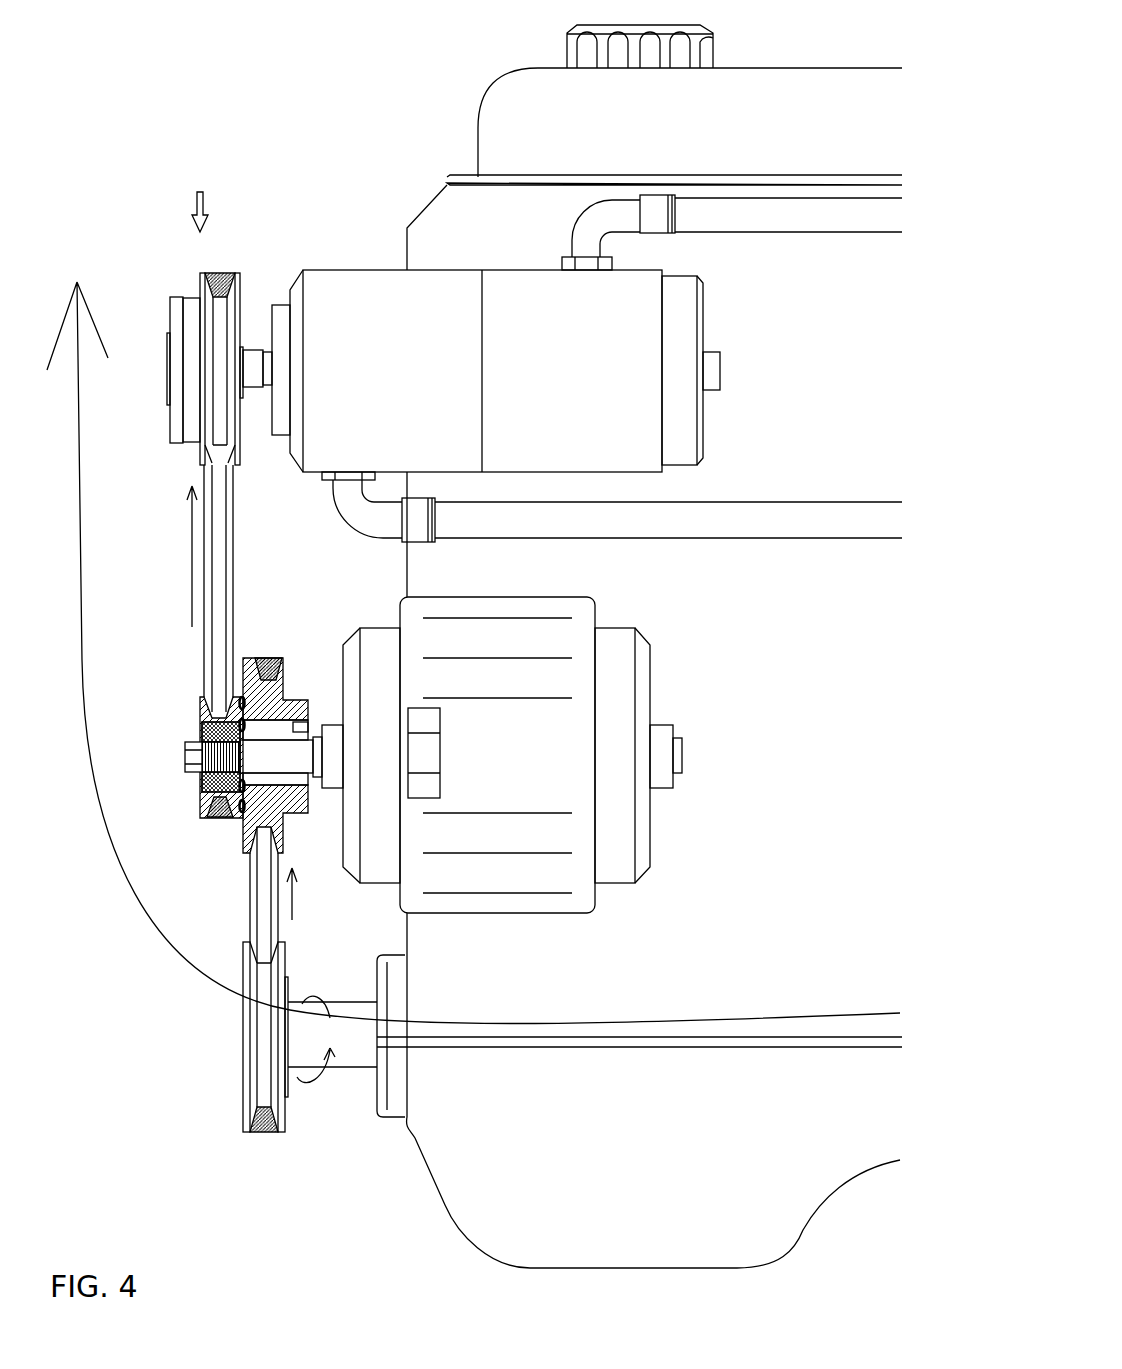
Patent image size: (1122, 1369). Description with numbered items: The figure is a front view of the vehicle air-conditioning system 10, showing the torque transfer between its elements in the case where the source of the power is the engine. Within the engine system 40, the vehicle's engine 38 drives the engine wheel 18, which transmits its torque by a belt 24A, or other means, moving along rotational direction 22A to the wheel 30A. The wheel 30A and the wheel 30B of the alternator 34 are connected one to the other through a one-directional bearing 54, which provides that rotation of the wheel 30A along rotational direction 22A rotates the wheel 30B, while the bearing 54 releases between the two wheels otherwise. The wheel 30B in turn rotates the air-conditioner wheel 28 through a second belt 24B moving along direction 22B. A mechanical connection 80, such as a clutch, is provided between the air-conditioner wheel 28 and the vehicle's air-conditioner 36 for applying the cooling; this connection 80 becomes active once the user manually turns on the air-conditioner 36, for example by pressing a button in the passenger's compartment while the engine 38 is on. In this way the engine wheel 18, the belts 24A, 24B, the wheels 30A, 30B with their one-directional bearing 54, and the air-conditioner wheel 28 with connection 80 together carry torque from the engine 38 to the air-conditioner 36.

The vehicle air-conditioning system 10 is at (203, 196).
The engine wheel 18 is at (252, 1087).
The rotational direction 22A is at (321, 975).
The direction 22B is at (167, 556).
The belt 24A is at (262, 920).
The belt 24B is at (222, 592).
The air-conditioner wheel 28 is at (233, 330).
The wheel 30A is at (272, 703).
The wheel of alternator 30B is at (317, 762).
The alternator 34 is at (527, 767).
The air-conditioner 36 is at (553, 388).
The engine 38 is at (370, 1047).
The engine system 40 is at (785, 783).
The one-directional bearing 54 is at (242, 697).
The mechanical connection 80 is at (178, 312).